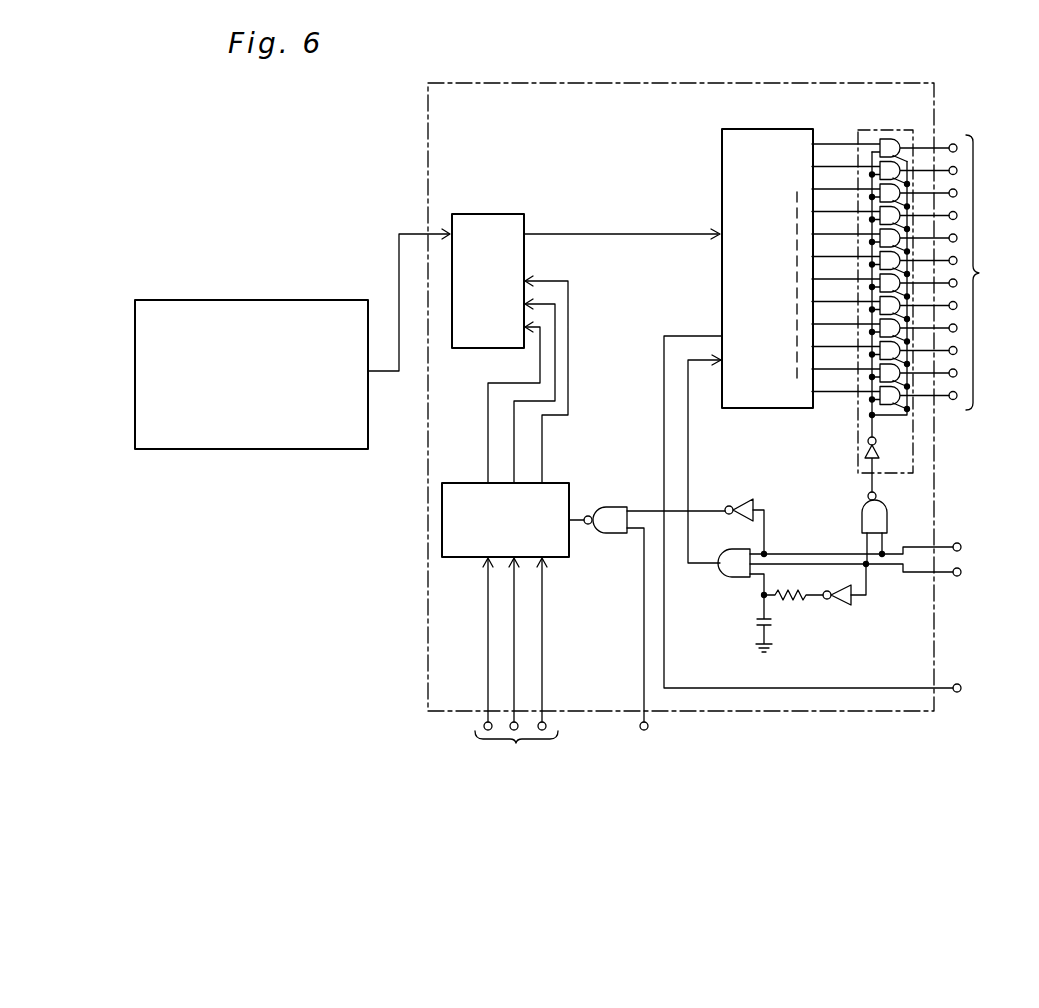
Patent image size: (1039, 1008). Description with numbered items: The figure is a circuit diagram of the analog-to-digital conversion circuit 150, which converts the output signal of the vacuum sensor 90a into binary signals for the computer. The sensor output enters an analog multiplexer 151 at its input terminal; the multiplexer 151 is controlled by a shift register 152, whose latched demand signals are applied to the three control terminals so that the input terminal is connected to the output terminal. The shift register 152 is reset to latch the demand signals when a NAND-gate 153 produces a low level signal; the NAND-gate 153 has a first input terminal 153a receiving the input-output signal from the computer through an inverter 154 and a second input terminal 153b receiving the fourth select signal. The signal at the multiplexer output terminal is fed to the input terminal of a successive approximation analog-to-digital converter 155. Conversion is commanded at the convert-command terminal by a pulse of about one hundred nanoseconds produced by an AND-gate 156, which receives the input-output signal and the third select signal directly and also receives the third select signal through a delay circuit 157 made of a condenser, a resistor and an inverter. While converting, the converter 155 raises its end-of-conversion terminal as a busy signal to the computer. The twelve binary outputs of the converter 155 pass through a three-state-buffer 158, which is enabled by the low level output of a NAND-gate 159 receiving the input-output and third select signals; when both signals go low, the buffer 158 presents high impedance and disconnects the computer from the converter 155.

The sensor 90a is at (302, 300).
The analog-to-digital conversion circuit 150 is at (770, 82).
The analog multiplexer 151 is at (486, 214).
The shift register 152 is at (464, 483).
The NAND-gate 153 is at (617, 533).
The first input terminal 153a is at (641, 509).
The second input terminal 153b is at (643, 557).
The inverter 154 is at (746, 499).
The successive approximation analog-to-digital converter 155 is at (772, 129).
The AND-gate 156 is at (731, 578).
The delay circuit 157 is at (790, 600).
The three-state-buffer 158 is at (870, 130).
The NAND-gate 159 is at (862, 515).